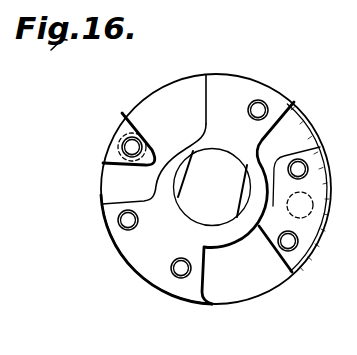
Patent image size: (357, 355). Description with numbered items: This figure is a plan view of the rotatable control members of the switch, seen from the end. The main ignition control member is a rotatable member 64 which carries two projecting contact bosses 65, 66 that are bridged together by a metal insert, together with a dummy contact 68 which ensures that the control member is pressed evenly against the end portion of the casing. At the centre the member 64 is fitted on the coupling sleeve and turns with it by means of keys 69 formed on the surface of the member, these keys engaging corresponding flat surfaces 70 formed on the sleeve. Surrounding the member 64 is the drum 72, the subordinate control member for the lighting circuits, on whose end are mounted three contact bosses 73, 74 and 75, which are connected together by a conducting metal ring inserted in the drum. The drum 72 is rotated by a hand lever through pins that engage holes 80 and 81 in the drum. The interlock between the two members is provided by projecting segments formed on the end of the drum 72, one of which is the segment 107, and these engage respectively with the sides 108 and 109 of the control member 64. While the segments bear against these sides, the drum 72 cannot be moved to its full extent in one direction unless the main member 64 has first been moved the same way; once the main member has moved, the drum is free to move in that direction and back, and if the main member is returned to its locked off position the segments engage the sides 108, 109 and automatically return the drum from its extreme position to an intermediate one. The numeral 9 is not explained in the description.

The rim section 9 is at (332, 208).
The rotatable member 64 is at (142, 251).
The contact boss 65 is at (124, 219).
The contact boss 66 is at (178, 282).
The dummy contact 68 is at (262, 107).
The keys 69 is at (180, 192).
The flat surfaces 70 is at (303, 153).
The drum 72 is at (187, 113).
The contact boss 73 is at (300, 170).
The contact boss 74 is at (290, 246).
The contact boss 75 is at (130, 147).
The hole 80 is at (112, 134).
The hole 81 is at (316, 222).
The projecting segment 107 is at (127, 133).
The side 108 is at (280, 125).
The side 109 is at (120, 199).